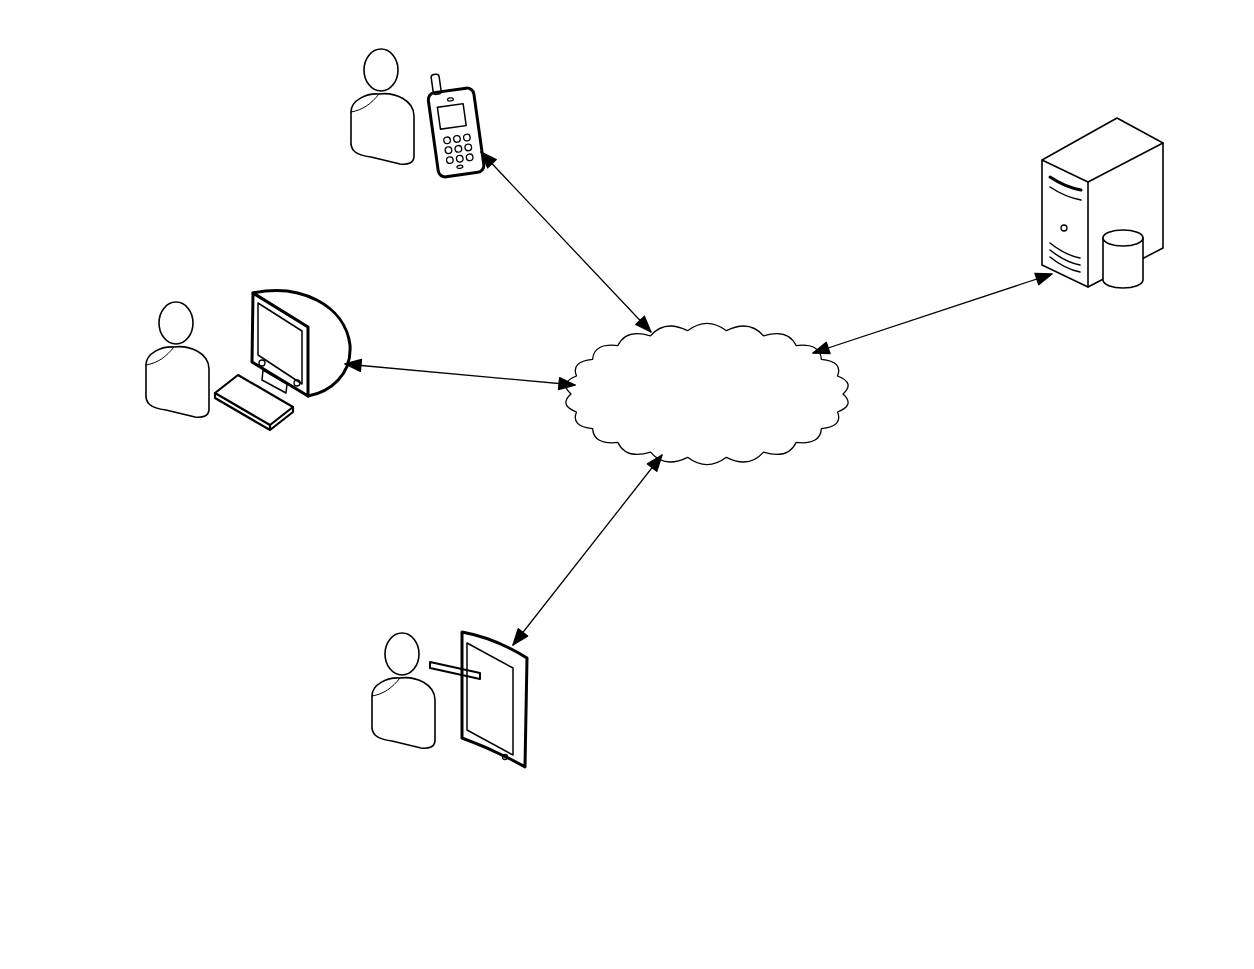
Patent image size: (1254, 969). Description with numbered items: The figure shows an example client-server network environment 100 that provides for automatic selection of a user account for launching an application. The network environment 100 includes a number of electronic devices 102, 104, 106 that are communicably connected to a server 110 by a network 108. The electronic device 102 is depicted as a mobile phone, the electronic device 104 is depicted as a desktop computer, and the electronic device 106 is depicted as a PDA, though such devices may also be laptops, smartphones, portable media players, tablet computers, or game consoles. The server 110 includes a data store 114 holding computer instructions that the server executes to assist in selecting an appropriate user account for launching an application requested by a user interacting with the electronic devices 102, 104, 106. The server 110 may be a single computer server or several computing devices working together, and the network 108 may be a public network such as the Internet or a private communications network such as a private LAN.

The network environment 100 is at (820, 92).
The electronic device 102 is at (489, 123).
The electronic device 104 is at (288, 293).
The electronic device 106 is at (515, 696).
The network 108 is at (707, 378).
The server 110 is at (1043, 304).
The data store 114 is at (1126, 214).